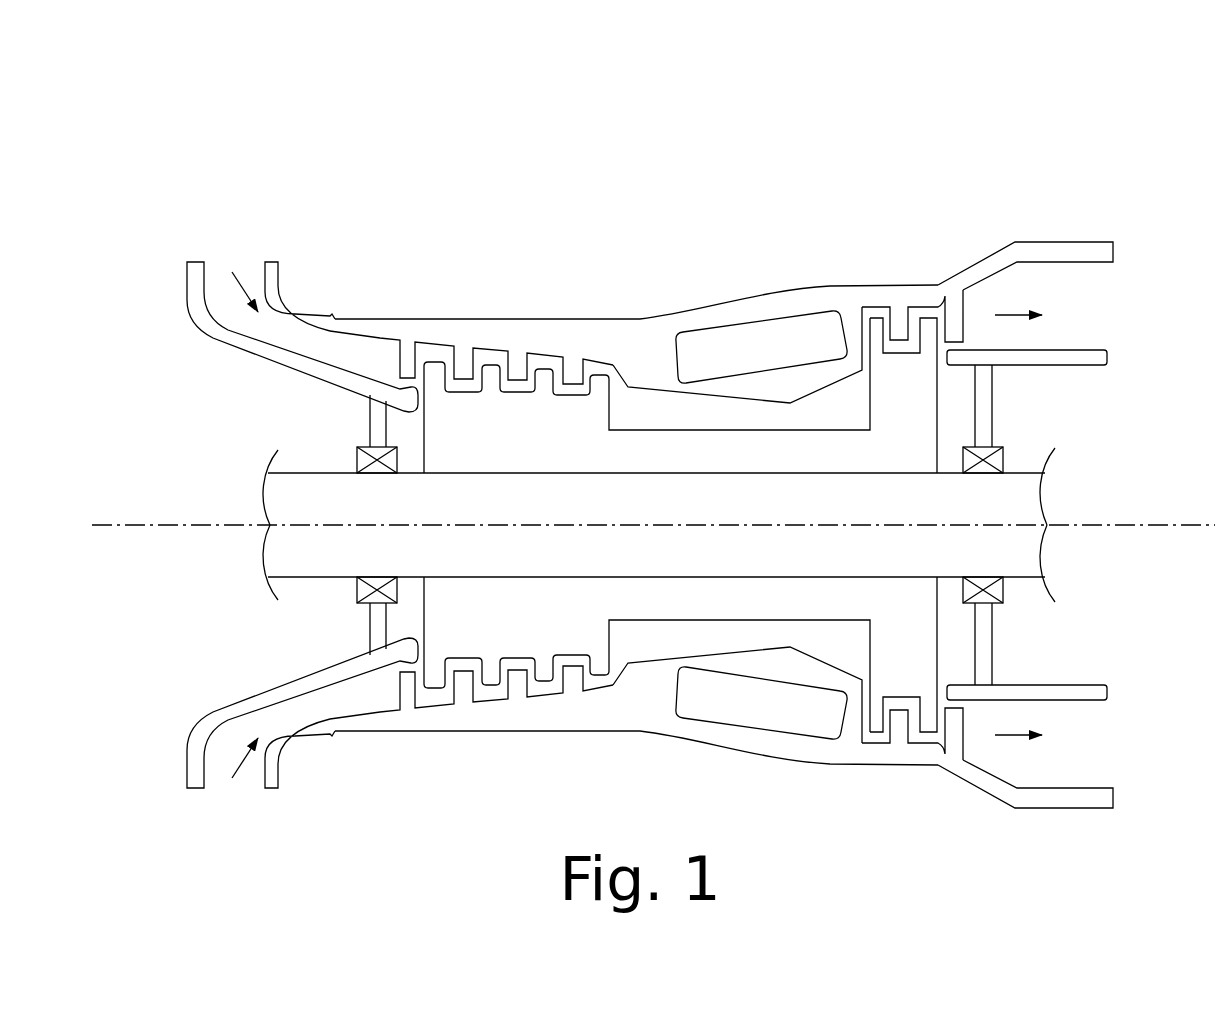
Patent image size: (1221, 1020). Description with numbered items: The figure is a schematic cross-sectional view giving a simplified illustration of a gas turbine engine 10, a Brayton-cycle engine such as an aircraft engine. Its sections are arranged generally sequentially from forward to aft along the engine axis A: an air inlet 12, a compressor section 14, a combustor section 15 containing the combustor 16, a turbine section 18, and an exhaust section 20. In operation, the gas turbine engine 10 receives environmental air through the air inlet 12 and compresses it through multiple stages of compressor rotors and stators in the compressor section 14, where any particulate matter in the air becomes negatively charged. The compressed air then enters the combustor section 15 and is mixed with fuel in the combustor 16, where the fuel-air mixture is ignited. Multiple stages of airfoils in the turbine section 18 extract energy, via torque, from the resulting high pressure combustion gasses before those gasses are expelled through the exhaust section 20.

The gas turbine engine 10 is at (308, 126).
The air inlet 12 is at (232, 245).
The compressor section 14 is at (388, 230).
The combustor section 15 is at (618, 230).
The combustor 16 is at (767, 348).
The turbine section 18 is at (968, 230).
The exhaust section 20 is at (1104, 312).
The engine axis A is at (163, 527).